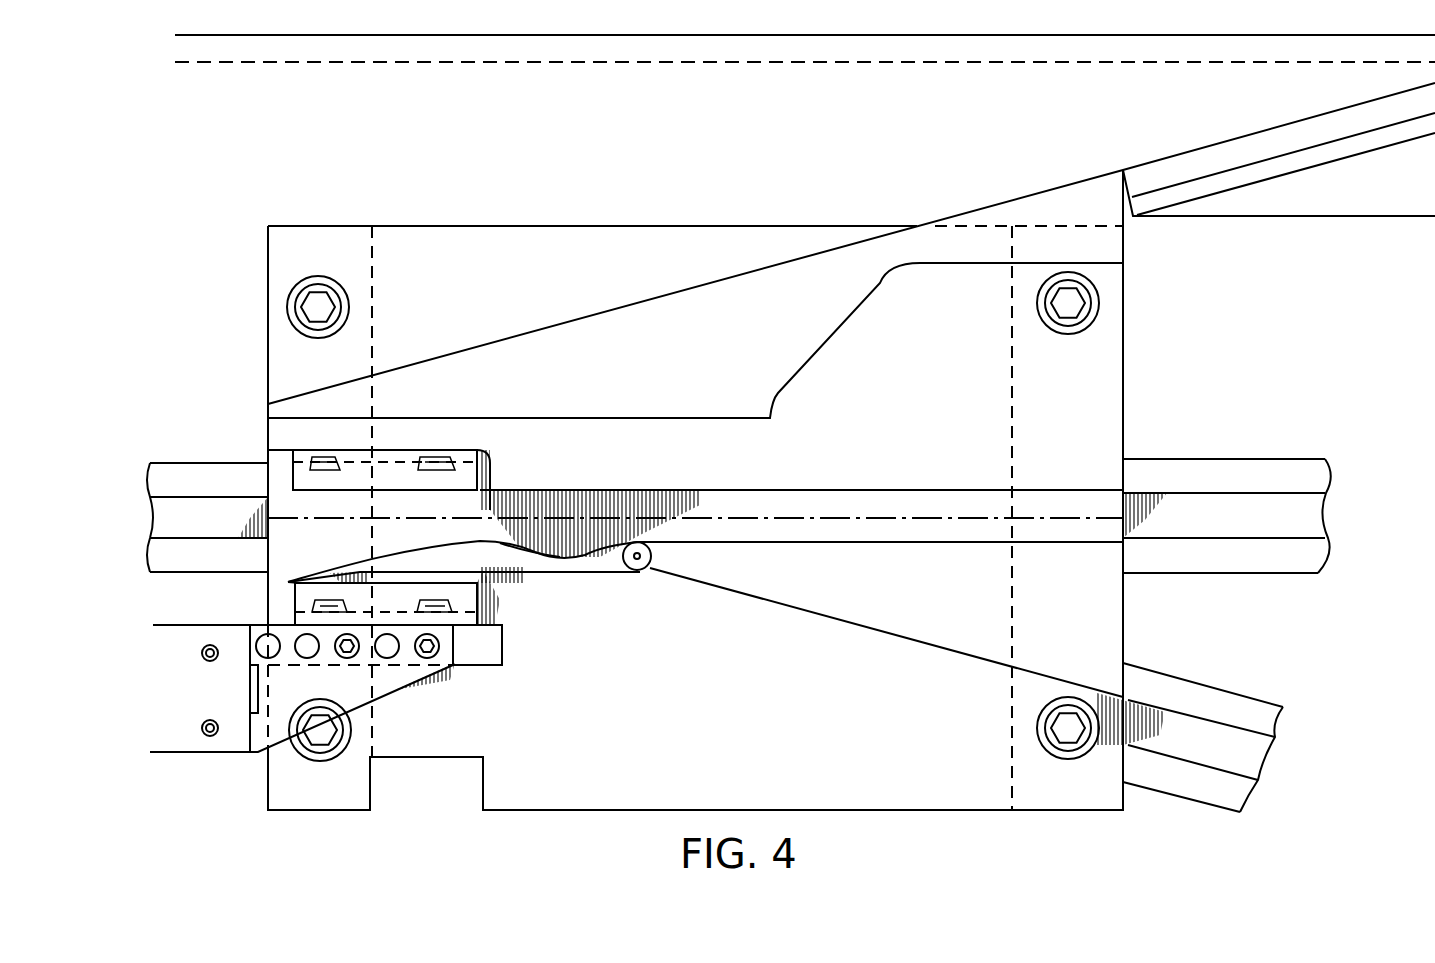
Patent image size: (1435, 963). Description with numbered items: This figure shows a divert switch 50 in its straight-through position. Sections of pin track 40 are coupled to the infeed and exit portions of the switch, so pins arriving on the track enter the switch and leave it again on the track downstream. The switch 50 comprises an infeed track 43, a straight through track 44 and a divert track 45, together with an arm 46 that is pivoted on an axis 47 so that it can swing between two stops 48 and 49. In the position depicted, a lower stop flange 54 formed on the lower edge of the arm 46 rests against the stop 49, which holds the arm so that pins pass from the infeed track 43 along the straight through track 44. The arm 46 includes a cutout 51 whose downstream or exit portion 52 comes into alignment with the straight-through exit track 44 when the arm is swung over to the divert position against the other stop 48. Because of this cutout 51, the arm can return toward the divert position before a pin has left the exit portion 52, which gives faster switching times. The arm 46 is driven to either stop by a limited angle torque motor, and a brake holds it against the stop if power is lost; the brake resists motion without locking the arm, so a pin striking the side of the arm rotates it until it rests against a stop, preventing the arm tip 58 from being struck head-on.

The pin track 40 is at (205, 470).
The infeed track 43 is at (287, 562).
The straight through track 44 is at (692, 505).
The divert track 45 is at (770, 603).
The arm 46 is at (495, 558).
The axis 47 is at (634, 570).
The stop 48 is at (300, 480).
The stop 49 is at (305, 595).
The divert switch 50 is at (502, 322).
The cutout 51 is at (545, 548).
The exit portion of the cutout 52 is at (578, 555).
The lower stop flange 54 is at (460, 577).
The arm tip 58 is at (300, 583).